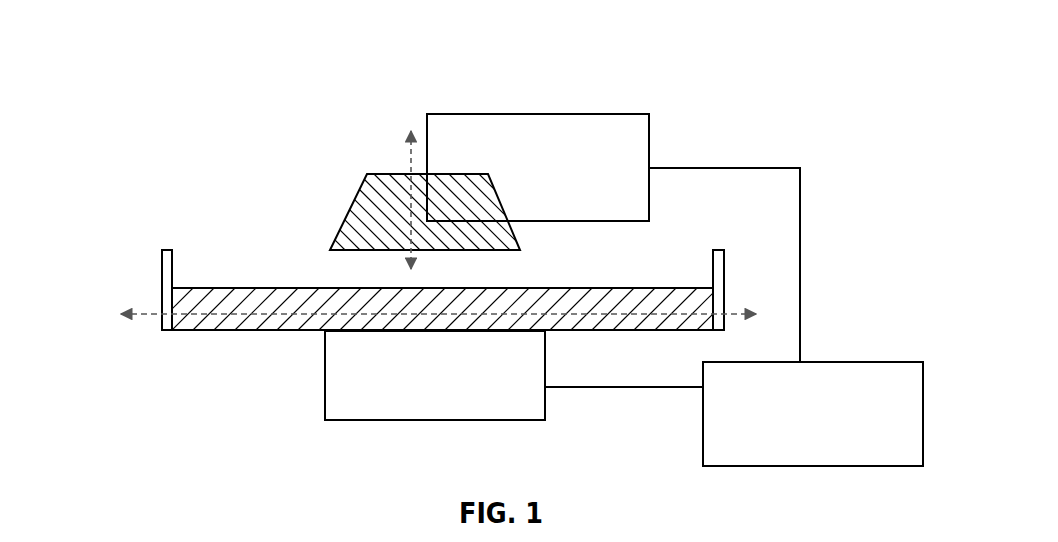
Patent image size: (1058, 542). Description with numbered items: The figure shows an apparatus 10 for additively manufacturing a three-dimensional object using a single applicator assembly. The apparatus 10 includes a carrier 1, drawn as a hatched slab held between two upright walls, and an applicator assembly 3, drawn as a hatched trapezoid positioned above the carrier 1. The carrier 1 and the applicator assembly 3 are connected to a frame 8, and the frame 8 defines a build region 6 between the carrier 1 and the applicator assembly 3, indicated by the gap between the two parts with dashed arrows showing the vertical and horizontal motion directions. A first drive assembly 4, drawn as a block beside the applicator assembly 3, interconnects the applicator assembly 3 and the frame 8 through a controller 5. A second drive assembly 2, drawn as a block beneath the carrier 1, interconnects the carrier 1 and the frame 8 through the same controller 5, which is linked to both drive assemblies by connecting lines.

The apparatus 10 is at (96, 46).
The carrier 1 is at (250, 322).
The second drive assembly 2 is at (435, 375).
The applicator assembly 3 is at (344, 212).
The first drive assembly 4 is at (538, 167).
The controller 5 is at (813, 414).
The build region 6 is at (356, 268).
The frame 8 is at (132, 273).